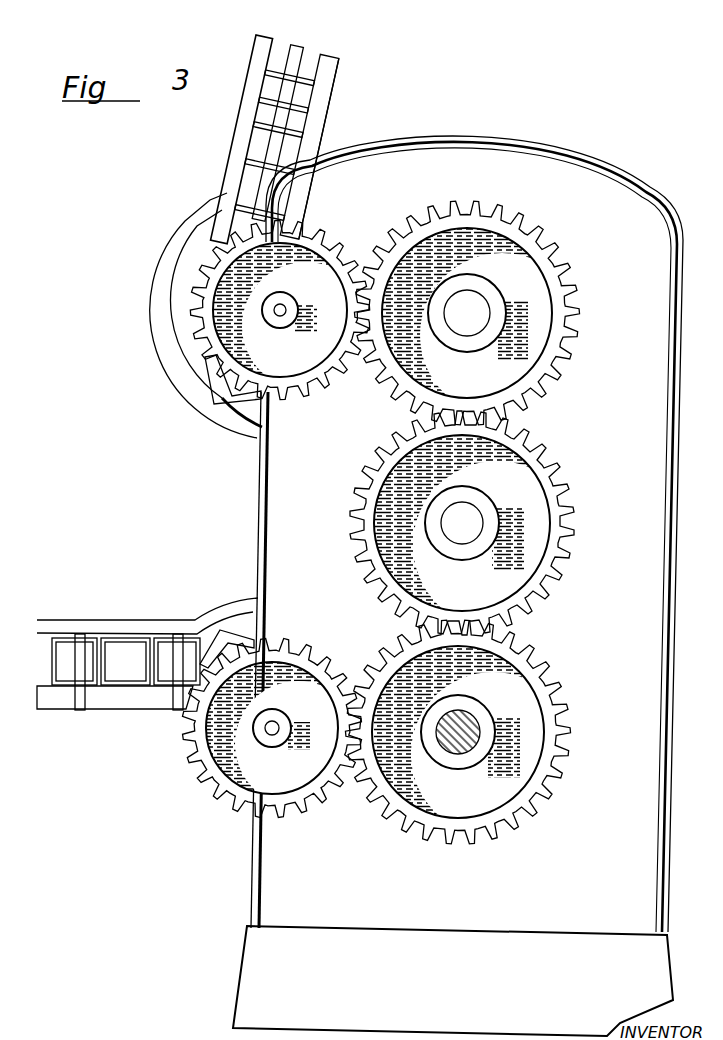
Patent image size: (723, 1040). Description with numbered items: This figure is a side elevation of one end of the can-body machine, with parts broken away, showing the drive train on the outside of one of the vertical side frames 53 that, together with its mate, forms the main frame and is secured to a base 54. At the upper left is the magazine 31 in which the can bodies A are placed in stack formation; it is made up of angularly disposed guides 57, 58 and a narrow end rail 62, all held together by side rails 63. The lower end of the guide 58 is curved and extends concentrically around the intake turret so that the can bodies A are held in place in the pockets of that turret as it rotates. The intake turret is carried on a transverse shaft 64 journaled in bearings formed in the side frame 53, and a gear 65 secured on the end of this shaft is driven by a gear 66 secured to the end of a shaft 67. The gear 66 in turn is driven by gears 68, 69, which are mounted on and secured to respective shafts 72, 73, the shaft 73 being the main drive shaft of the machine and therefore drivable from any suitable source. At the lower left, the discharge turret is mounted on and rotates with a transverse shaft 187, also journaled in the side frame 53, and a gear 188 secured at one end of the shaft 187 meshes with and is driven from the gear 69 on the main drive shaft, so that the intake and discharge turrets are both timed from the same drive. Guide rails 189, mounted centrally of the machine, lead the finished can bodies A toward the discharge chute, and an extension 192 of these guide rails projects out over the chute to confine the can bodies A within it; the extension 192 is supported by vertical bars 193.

The magazine 31 is at (326, 68).
The vertical side frame 53 is at (474, 534).
The base 54 is at (453, 981).
The angularly disposed guide 57 is at (322, 106).
The angularly disposed guide 58 is at (222, 178).
The narrow end rail 62 is at (300, 58).
The side rail 63 is at (265, 90).
The transverse shaft 64 is at (285, 312).
The gear 65 is at (280, 310).
The gear 66 is at (467, 313).
The shaft 67 is at (470, 308).
The gear 68 is at (465, 523).
The gear 69 is at (458, 732).
The shaft 72 is at (466, 520).
The main drive shaft 73 is at (462, 725).
The transverse shaft 187 is at (278, 725).
The gear 188 is at (271, 727).
The guide rails 189 is at (237, 607).
The extension 192 is at (90, 635).
The vertical bar 193 is at (80, 690).
The can body A is at (290, 152).